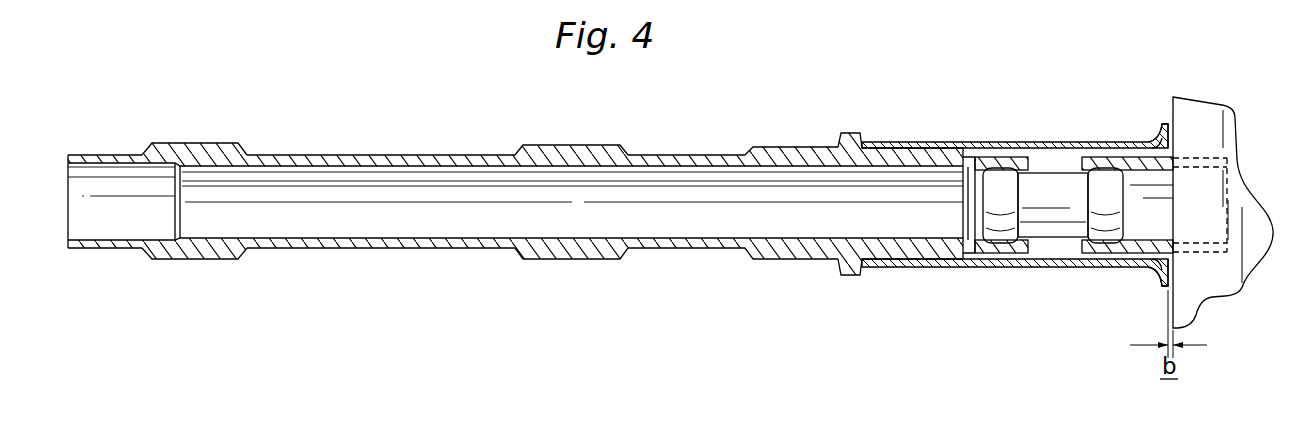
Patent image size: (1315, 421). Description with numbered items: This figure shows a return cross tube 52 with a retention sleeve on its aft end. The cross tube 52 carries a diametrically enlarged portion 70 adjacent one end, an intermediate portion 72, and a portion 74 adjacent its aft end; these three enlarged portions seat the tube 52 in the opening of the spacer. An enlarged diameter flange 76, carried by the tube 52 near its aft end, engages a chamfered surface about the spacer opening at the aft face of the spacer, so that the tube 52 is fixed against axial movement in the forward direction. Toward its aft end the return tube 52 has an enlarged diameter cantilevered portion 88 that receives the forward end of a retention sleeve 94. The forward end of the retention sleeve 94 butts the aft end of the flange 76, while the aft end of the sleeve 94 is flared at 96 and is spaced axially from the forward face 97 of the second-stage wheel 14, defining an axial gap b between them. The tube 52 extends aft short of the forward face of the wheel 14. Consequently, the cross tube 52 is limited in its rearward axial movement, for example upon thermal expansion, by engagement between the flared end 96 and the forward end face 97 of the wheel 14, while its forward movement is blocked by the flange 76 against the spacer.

The second-stage wheel 14 is at (1198, 115).
The return cross tube 52 is at (408, 249).
The diametrically enlarged portion 70 is at (193, 143).
The intermediate portion 72 is at (568, 145).
The portion adjacent the aft end 74 is at (800, 147).
The enlarged diameter flange 76 is at (848, 133).
The enlarged diameter cantilevered portion 88 is at (902, 252).
The retention sleeve 94 is at (1030, 268).
The flared end 96 is at (1160, 283).
The forward face 97 is at (1170, 110).